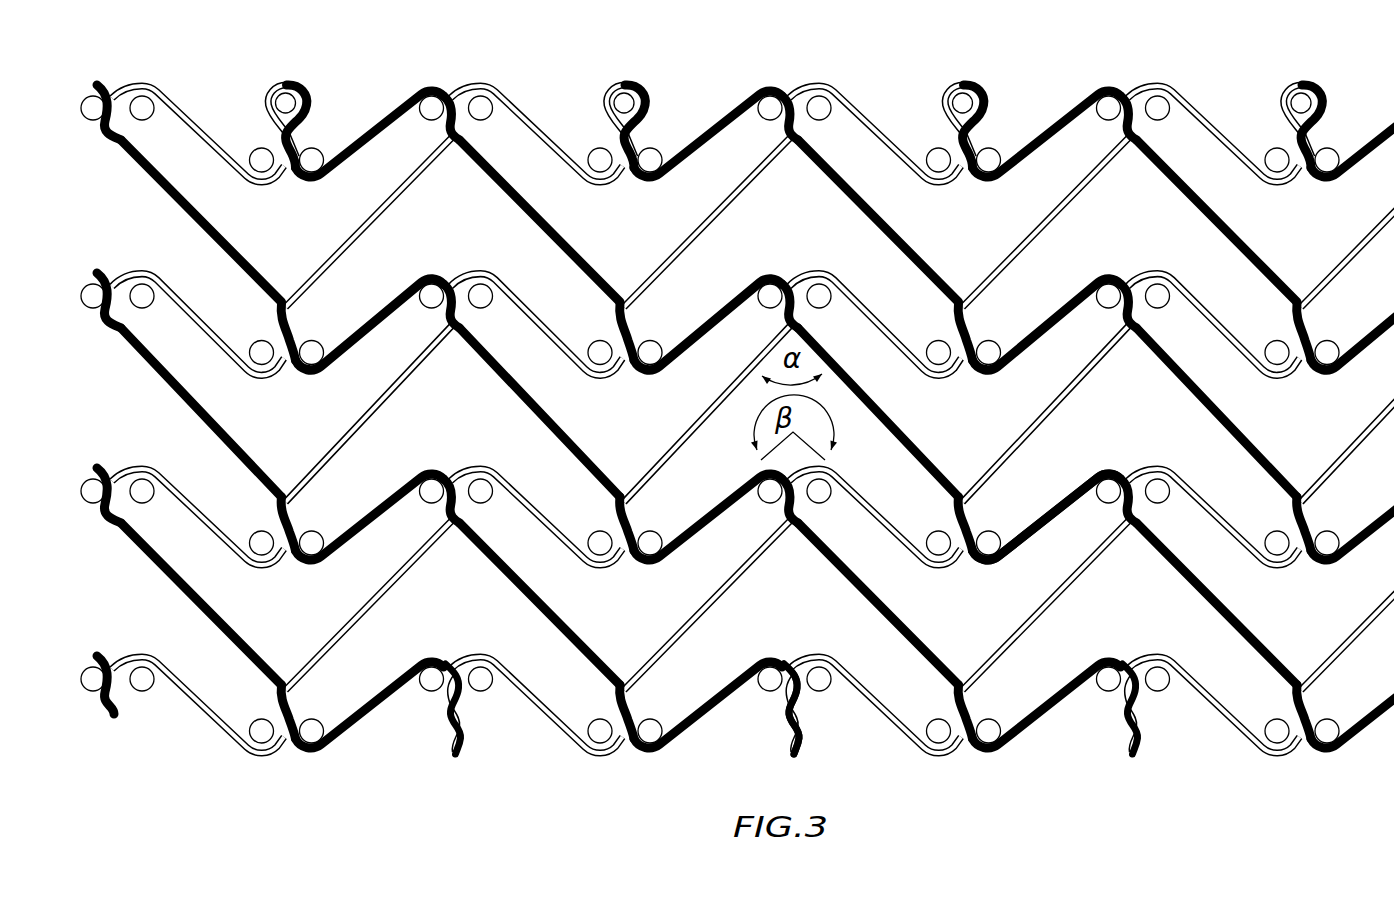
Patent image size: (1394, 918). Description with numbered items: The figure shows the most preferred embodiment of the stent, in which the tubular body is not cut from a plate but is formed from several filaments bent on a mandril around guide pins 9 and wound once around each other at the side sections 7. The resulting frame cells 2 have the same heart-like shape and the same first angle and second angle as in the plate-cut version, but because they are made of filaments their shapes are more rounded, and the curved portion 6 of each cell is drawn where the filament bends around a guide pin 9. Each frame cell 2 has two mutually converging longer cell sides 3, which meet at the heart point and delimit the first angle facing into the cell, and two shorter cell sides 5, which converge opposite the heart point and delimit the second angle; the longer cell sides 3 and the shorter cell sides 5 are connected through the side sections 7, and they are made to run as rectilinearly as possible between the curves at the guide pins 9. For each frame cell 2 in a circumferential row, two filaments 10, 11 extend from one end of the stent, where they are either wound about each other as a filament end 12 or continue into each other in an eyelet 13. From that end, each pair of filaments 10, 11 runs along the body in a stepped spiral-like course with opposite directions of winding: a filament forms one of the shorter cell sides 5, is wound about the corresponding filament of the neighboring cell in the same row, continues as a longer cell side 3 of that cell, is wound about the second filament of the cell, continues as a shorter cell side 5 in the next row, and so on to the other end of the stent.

The frame cell 2 is at (279, 252).
The longer cell side 3 is at (550, 240).
The shorter cell side 5 is at (563, 161).
The bend of spiral 6 is at (1138, 461).
The side section 7 is at (805, 325).
The guide pin 9 is at (762, 302).
The filament 10 is at (650, 103).
The filament 11 is at (605, 110).
The filament end 12 is at (775, 746).
The eyelet 13 is at (625, 80).